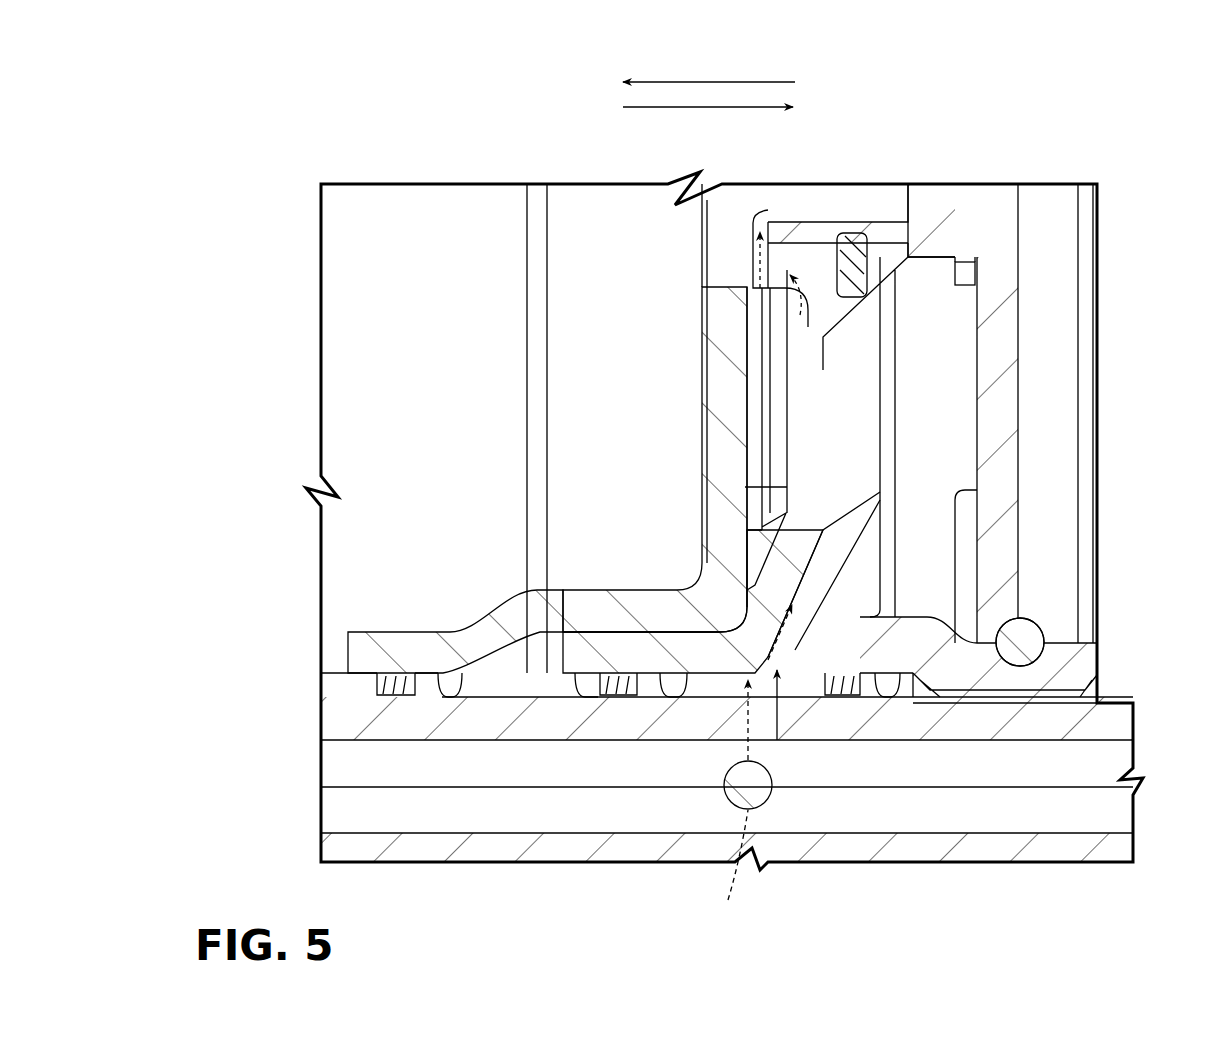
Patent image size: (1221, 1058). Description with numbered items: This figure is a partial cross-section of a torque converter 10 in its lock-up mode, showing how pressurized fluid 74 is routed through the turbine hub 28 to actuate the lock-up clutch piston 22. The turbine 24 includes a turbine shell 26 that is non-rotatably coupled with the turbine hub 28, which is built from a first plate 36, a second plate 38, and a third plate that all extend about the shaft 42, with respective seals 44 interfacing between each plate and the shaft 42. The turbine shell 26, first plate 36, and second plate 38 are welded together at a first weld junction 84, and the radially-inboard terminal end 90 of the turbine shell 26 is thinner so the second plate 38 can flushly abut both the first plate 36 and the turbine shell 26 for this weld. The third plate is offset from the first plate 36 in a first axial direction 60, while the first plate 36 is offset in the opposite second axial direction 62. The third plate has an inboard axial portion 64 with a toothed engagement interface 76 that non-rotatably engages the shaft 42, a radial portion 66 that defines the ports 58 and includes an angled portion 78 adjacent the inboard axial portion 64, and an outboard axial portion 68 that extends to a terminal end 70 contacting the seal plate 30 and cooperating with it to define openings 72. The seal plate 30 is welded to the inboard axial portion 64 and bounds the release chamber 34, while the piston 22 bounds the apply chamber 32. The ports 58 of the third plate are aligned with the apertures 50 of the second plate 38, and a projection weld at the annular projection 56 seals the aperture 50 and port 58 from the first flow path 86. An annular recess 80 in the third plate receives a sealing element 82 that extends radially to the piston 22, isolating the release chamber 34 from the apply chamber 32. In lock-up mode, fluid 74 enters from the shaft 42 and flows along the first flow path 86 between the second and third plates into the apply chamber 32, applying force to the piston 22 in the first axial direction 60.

The torque converter 10 is at (1095, 145).
The piston 22 is at (882, 215).
The turbine 24 is at (723, 200).
The turbine shell 26 is at (731, 303).
The turbine hub 28 is at (730, 473).
The seal plate 30 is at (1000, 418).
The apply chamber 32 is at (806, 203).
The release chamber 34 is at (935, 205).
The first plate 36 is at (420, 635).
The second plate 38 is at (710, 660).
The shaft 42 is at (880, 735).
The seals 44 is at (392, 685).
The apertures 50 is at (790, 433).
The annular projection 56 is at (838, 485).
The ports 58 is at (855, 420).
The first axial direction 60 is at (727, 107).
The second axial direction 62 is at (720, 82).
The inboard axial portion 64 is at (1000, 680).
The radial portion 66 is at (850, 508).
The outboard axial portion 68 is at (950, 213).
The terminal end 70 is at (975, 275).
The openings 72 is at (963, 262).
The pressurized fluid 74 is at (731, 807).
The engagement interface 76 is at (1090, 703).
The angled portion 78 is at (838, 570).
The annular recess 80 is at (838, 270).
The sealing element 82 is at (703, 358).
The first weld junction 84 is at (713, 243).
The first flow path 86 is at (782, 690).
The radially-inboard terminal end 90 is at (705, 350).